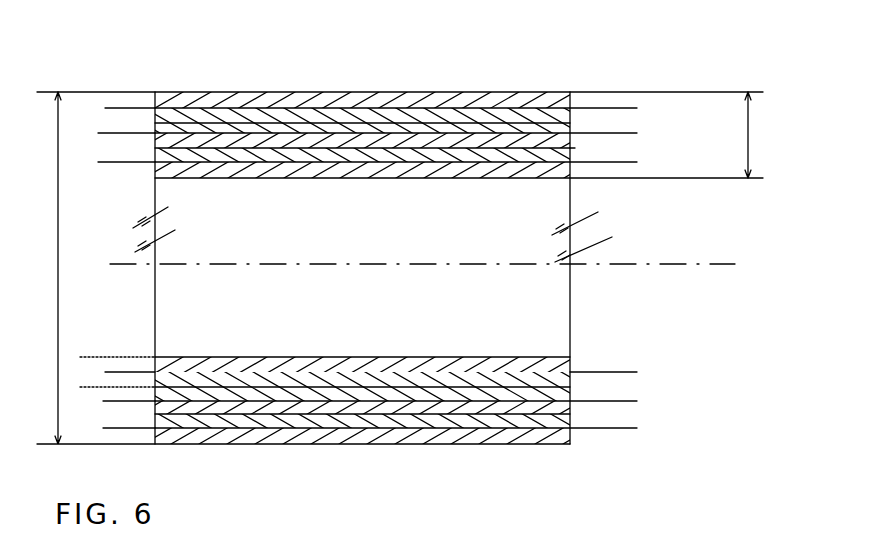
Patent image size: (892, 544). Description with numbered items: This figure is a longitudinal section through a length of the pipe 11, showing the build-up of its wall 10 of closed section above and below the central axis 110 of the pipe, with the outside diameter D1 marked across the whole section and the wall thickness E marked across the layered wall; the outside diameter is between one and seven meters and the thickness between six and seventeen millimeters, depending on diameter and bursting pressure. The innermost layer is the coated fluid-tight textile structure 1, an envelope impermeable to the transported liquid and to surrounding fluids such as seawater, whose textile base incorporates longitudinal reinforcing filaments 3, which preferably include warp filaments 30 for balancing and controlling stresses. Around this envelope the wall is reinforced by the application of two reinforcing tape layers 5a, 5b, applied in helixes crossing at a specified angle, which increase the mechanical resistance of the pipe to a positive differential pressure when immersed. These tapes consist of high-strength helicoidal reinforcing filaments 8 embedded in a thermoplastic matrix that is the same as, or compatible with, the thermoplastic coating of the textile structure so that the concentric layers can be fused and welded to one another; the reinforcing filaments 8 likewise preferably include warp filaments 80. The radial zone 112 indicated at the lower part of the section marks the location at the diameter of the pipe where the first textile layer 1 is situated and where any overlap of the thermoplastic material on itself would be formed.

The coated fluid-tight textile structure 1 is at (502, 174).
The longitudinal reinforcing filaments 3 is at (202, 105).
The reinforcing tape layer 5a is at (575, 146).
The reinforcing tape layer 5b is at (547, 90).
The helicoidal reinforcing filaments 8 is at (247, 130).
The wall 10 is at (713, 362).
The pipe 11 is at (442, 81).
The warp filaments 30 is at (106, 166).
The warp filaments 80 is at (120, 132).
The central axis 110 is at (400, 261).
The radial zone 112 is at (100, 355).
The thickness E is at (762, 135).
The outside diameter D1 is at (295, 268).